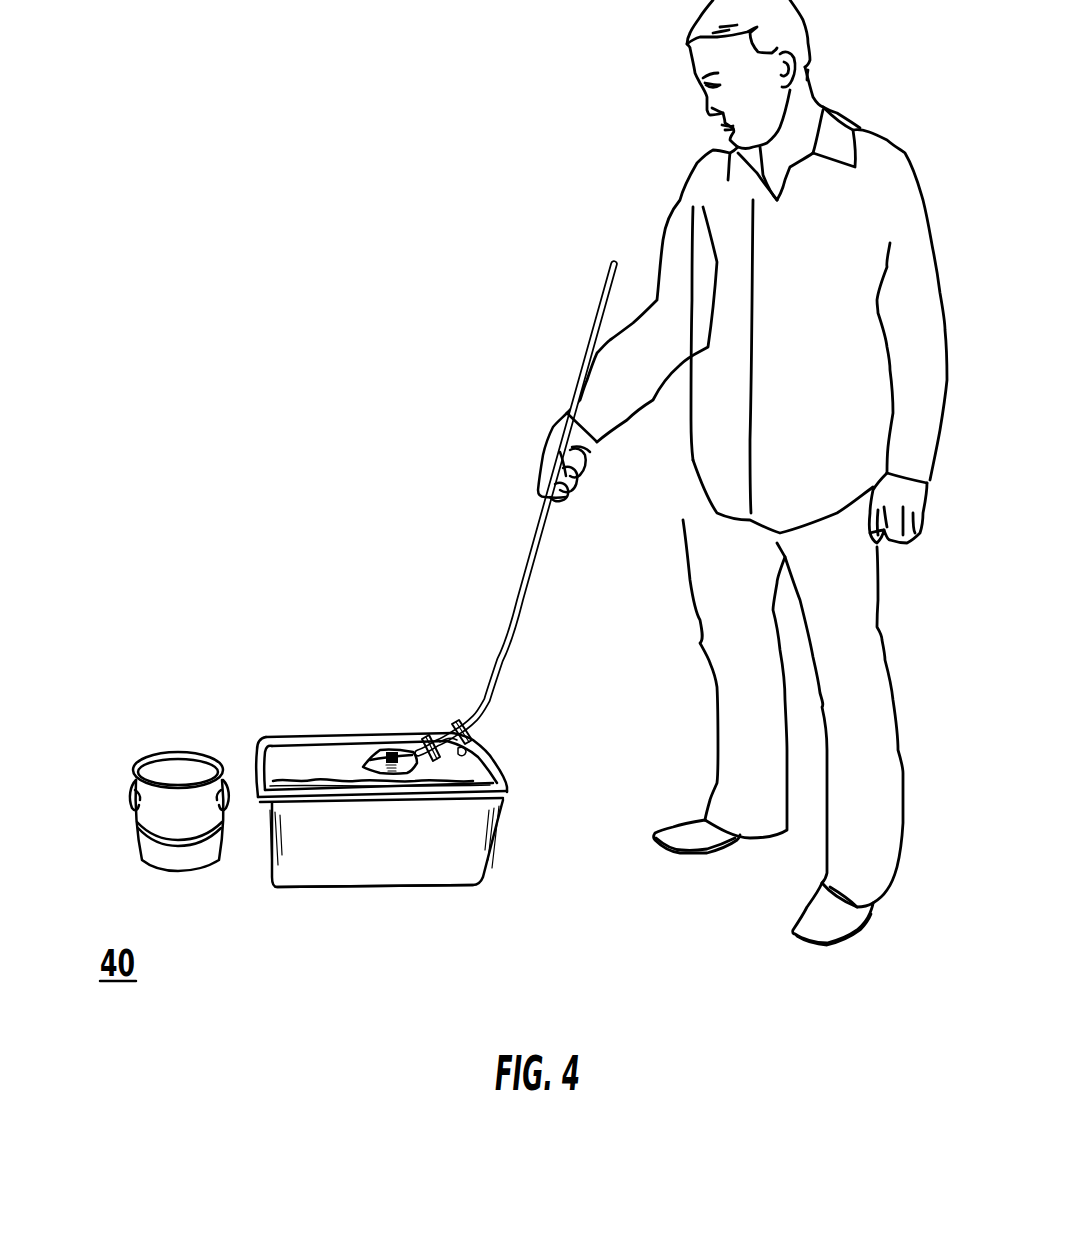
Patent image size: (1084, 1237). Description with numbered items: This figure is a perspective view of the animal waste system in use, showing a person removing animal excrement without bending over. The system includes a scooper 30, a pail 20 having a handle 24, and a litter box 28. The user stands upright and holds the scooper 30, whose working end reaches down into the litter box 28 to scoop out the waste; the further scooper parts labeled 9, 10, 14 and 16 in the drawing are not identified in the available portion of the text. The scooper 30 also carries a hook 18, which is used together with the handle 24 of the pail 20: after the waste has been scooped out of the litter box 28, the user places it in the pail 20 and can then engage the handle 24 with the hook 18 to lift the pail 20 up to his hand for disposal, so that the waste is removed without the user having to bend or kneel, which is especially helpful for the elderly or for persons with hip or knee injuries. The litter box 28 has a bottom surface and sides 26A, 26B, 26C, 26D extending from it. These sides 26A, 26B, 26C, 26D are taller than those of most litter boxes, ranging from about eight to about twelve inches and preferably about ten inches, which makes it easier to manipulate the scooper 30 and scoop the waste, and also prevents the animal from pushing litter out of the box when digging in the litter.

The hinge 9 is at (437, 734).
The cleaning head 10 is at (394, 750).
The handle 14 is at (606, 288).
The clamp 16 is at (473, 734).
The hook 18 is at (470, 758).
The pail 20 is at (172, 856).
The handle 24 is at (131, 803).
The side 26A is at (470, 873).
The side 26B is at (457, 837).
The side 26C is at (335, 742).
The side 26D is at (263, 835).
The litter box 28 is at (356, 912).
The scooper 30 is at (505, 356).